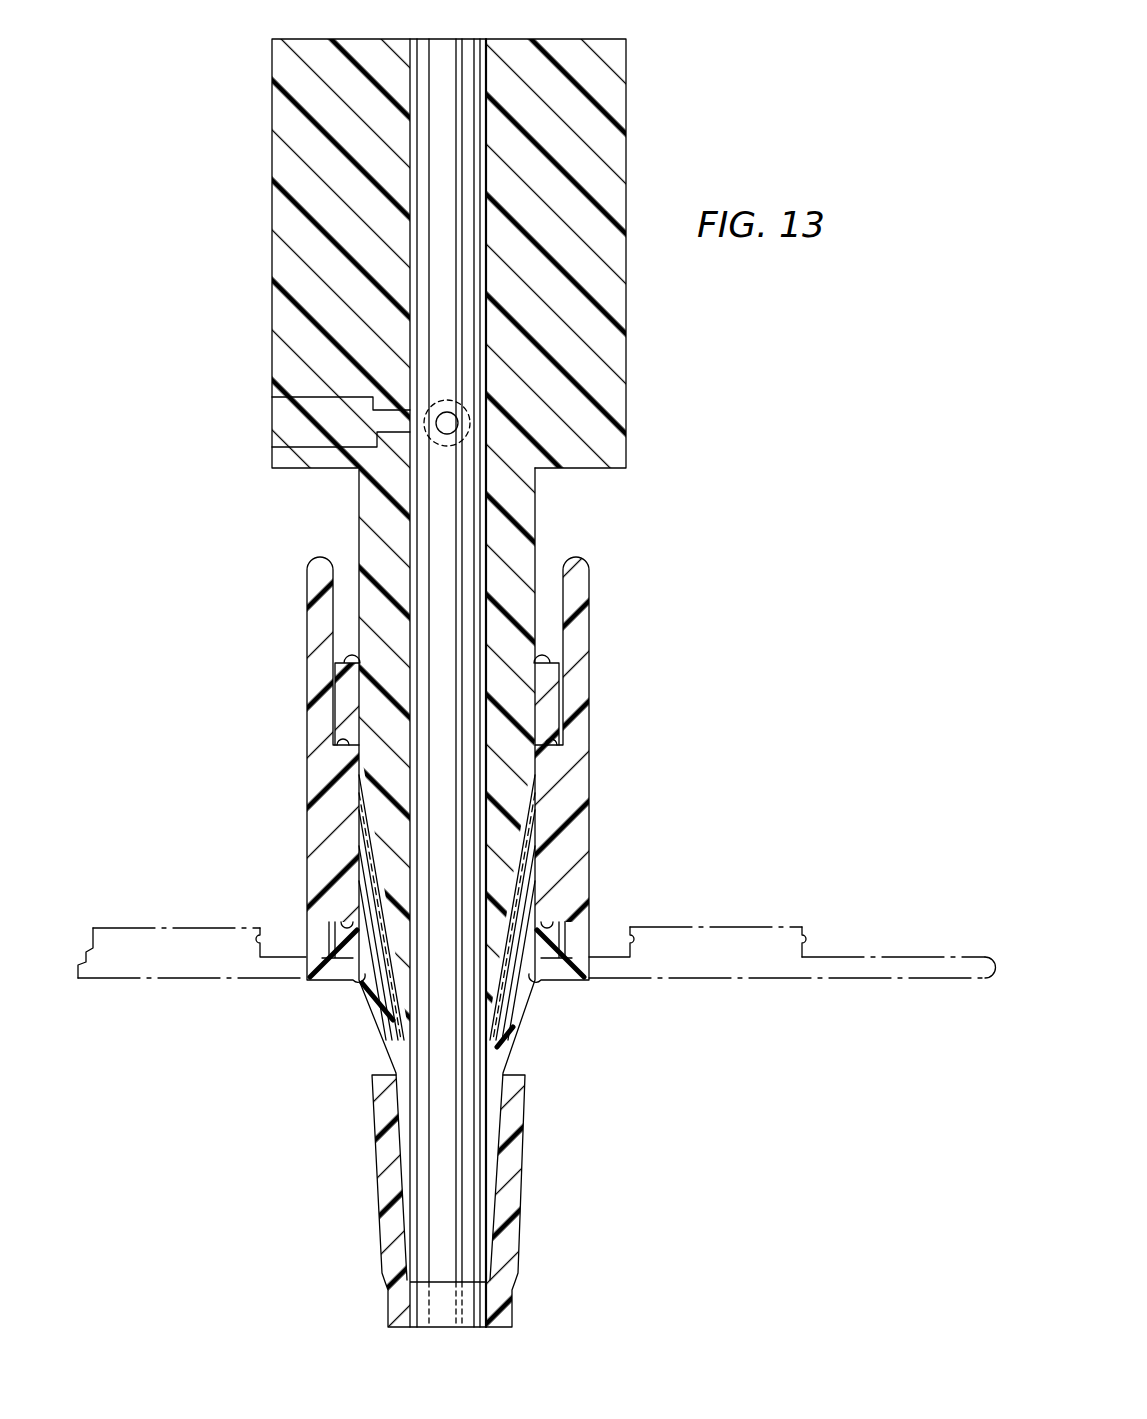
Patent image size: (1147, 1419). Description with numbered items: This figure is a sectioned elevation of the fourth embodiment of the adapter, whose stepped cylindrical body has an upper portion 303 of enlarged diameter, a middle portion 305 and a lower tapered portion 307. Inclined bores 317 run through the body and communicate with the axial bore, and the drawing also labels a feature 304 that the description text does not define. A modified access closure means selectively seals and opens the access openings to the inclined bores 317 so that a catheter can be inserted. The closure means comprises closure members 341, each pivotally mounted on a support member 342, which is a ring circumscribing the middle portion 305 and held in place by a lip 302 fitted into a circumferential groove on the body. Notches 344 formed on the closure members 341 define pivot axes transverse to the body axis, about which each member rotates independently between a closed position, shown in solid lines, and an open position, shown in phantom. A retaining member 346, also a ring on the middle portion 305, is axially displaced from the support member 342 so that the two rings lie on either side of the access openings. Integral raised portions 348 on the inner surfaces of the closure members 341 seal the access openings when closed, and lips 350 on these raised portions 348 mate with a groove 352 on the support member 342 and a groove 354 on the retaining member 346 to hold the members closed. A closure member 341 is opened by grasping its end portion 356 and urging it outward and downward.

The upper portion 303 is at (610, 133).
The middle portion 305 is at (530, 505).
The closure member 341 is at (313, 593).
The end portion 356 is at (570, 573).
The retaining member 346 is at (348, 662).
The groove 354 is at (560, 770).
The lip 350 is at (343, 743).
The raised portion 348 is at (560, 807).
The groove 352 is at (592, 902).
The notch 344 is at (305, 963).
The support member 342 is at (557, 985).
The collet fingers 304 is at (230, 899).
The inclined bore 317 is at (403, 967).
The lip 302 is at (357, 975).
The lower tapered portion 307 is at (523, 1065).